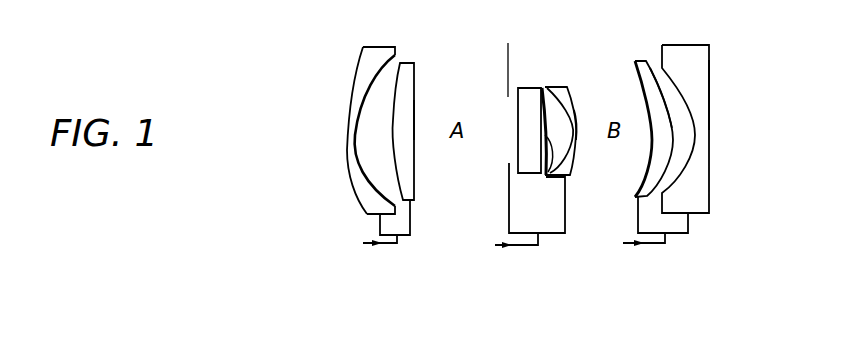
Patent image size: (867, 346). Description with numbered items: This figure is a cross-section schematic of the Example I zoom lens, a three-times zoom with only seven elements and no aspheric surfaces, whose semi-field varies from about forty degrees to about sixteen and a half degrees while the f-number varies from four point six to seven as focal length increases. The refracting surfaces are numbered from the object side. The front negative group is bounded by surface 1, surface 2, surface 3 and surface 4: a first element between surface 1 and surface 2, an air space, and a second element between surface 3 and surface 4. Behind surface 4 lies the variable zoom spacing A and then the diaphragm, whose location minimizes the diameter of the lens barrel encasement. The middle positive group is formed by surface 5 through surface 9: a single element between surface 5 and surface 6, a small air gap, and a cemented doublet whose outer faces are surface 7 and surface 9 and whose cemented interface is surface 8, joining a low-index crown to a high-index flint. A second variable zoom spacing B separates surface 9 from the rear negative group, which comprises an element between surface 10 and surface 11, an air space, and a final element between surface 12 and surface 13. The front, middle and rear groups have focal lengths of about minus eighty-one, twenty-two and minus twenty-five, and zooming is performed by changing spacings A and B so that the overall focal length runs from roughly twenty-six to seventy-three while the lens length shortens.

The lens surface 1 is at (350, 76).
The lens surface 2 is at (357, 117).
The lens surface 3 is at (398, 101).
The lens surface 4 is at (415, 121).
The lens surface 5 is at (518, 125).
The lens surface 6 is at (552, 173).
The lens surface 7 is at (540, 88).
The lens surface 8 is at (575, 135).
The lens surface 9 is at (576, 131).
The lens surface 10 is at (644, 108).
The lens surface 11 is at (653, 72).
The lens surface 12 is at (676, 76).
The lens surface 13 is at (710, 95).